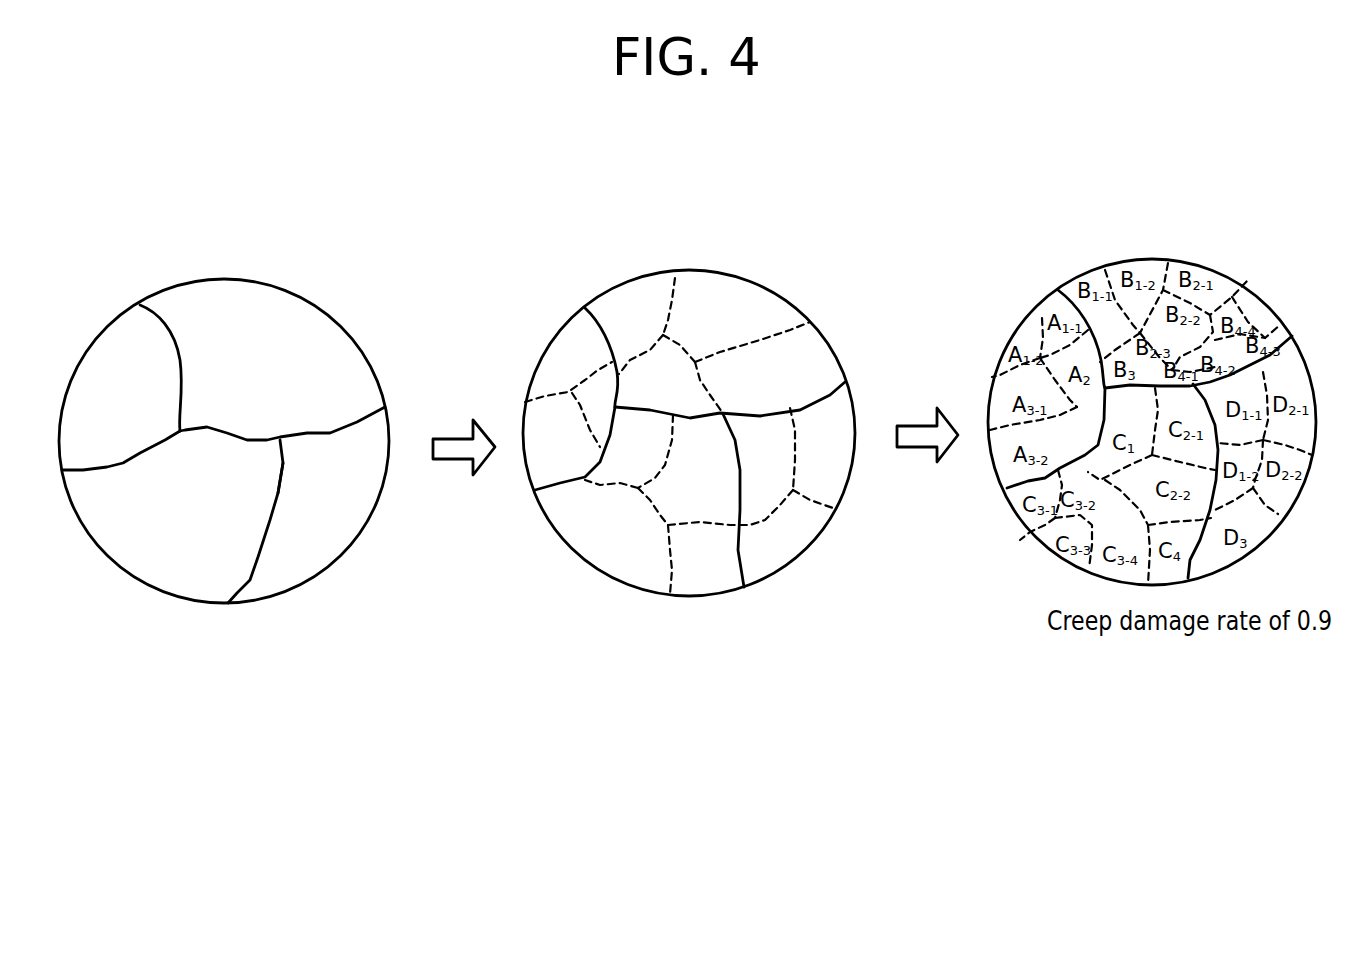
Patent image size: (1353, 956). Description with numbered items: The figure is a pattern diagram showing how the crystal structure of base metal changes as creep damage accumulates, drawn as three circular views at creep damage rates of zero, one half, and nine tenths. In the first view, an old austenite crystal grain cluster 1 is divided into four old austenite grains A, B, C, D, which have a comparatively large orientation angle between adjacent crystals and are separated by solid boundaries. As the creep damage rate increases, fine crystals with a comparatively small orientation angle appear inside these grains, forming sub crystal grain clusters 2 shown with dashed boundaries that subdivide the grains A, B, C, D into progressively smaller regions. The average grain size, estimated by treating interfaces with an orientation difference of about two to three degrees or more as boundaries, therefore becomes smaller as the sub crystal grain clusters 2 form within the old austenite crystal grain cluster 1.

The old austenite crystal grain cluster 1 is at (292, 437).
The sub crystal grain cluster 2 is at (797, 230).
The old austenite grain A is at (121, 387).
The old austenite grain B is at (282, 409).
The old austenite grain C is at (235, 521).
The old austenite grain D is at (303, 495).